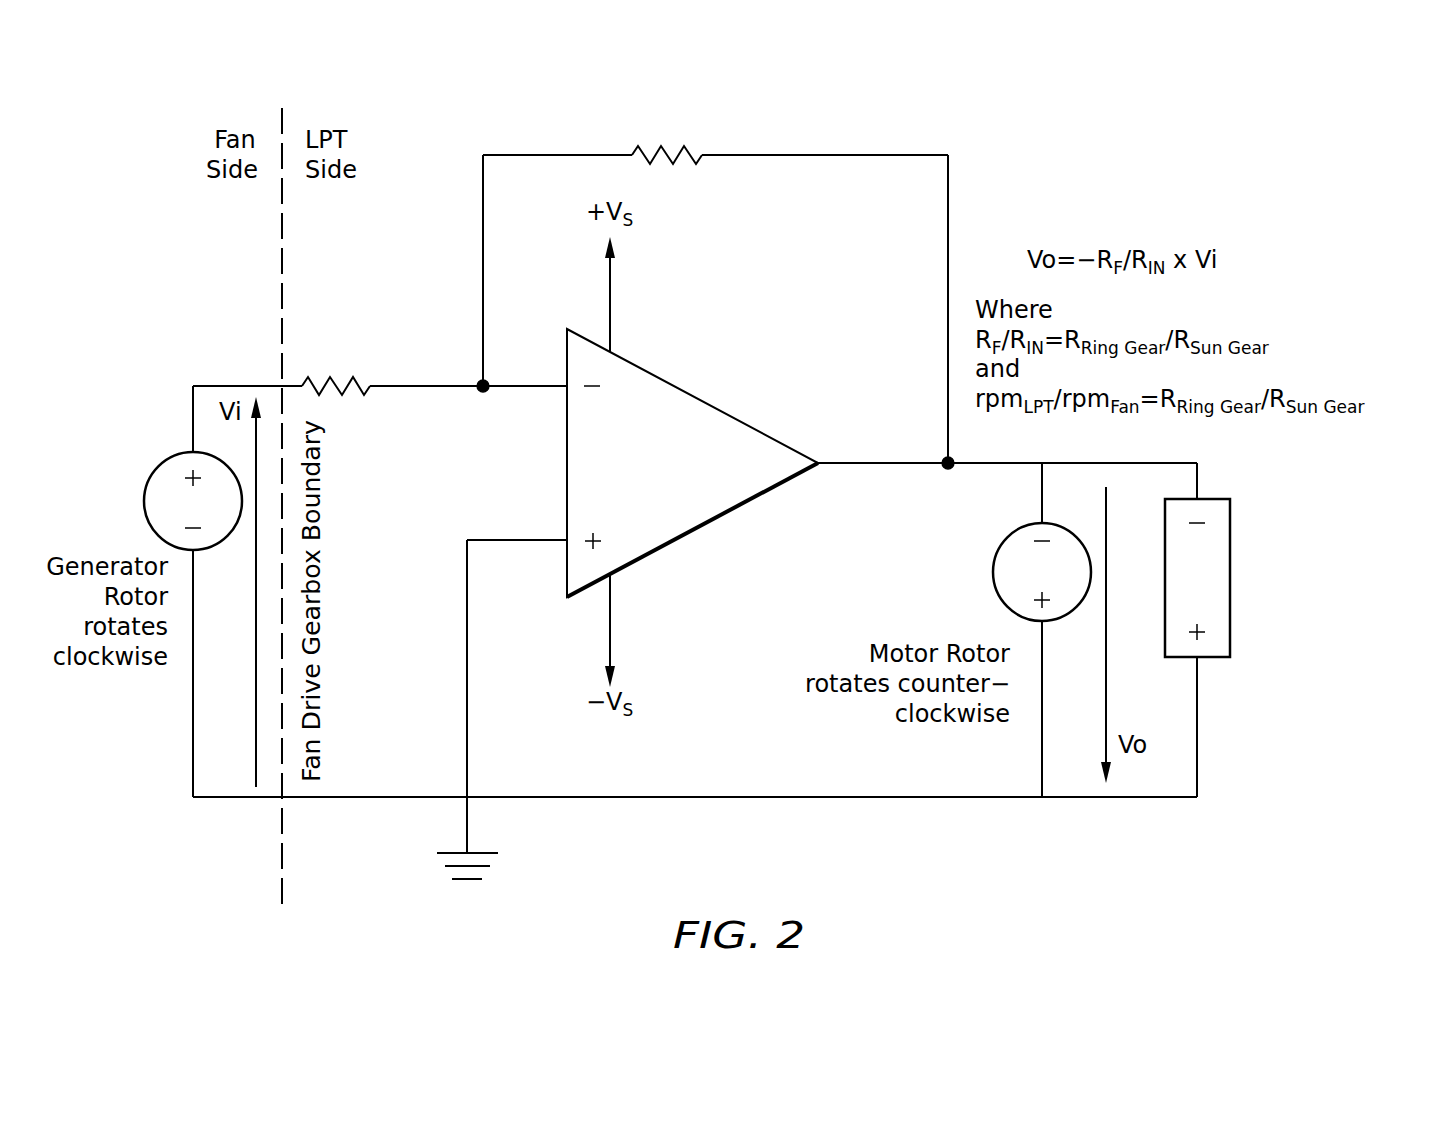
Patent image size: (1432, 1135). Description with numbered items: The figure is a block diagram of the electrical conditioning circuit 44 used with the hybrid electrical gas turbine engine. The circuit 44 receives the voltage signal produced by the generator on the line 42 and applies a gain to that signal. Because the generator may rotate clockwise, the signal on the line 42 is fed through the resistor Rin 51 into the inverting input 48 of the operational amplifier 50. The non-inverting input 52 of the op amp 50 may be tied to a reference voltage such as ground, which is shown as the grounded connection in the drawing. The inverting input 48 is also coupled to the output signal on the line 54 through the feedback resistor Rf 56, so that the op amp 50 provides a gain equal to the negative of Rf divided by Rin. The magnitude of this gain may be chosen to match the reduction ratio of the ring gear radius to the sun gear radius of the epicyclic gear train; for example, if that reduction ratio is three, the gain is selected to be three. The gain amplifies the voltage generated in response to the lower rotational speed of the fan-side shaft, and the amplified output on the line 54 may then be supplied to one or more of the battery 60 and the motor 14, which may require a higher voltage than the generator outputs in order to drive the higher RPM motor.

The motor 14 is at (1014, 532).
The line 42 is at (218, 386).
The circuit 44 is at (1196, 127).
The inverting input 48 is at (565, 388).
The operational amplifier 50 is at (708, 403).
The resistor Rin 51 is at (358, 393).
The non-inverting input 52 is at (562, 541).
The line 54 is at (887, 462).
The feedback resistor Rf 56 is at (687, 163).
The battery 60 is at (1230, 540).